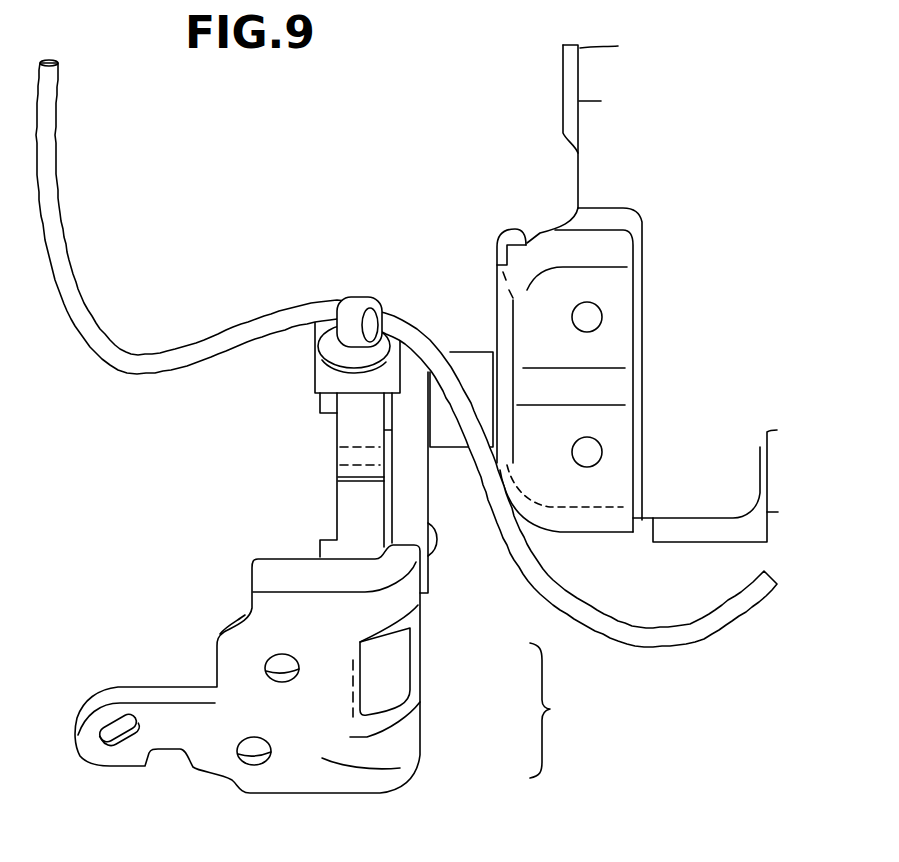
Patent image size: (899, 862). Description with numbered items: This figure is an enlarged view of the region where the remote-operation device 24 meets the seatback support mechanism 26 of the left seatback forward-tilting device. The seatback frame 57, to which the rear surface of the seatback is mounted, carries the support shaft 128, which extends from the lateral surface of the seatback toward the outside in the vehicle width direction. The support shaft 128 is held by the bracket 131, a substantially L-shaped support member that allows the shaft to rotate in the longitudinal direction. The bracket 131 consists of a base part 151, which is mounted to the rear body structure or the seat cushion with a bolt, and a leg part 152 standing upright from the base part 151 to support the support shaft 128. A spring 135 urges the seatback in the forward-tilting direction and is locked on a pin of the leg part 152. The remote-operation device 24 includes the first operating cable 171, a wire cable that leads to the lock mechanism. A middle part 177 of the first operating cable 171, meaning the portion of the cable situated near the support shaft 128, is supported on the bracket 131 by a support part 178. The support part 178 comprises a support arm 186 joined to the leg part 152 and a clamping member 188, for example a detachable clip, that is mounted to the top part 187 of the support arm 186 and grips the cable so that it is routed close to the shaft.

The remote-operation device 24 is at (245, 278).
The seatback support mechanism 26 is at (161, 575).
The seatback frame 57 is at (563, 97).
The support shaft 128 is at (480, 372).
The bracket 131 is at (565, 710).
The spring 135 is at (337, 450).
The base part 151 is at (400, 768).
The leg part 152 is at (422, 627).
The first operating cable 171 is at (71, 200).
The middle part 177 is at (443, 350).
The support part 178 is at (368, 278).
The support arm 186 is at (413, 458).
The top part 187 is at (402, 358).
The clamping member 188 is at (340, 306).